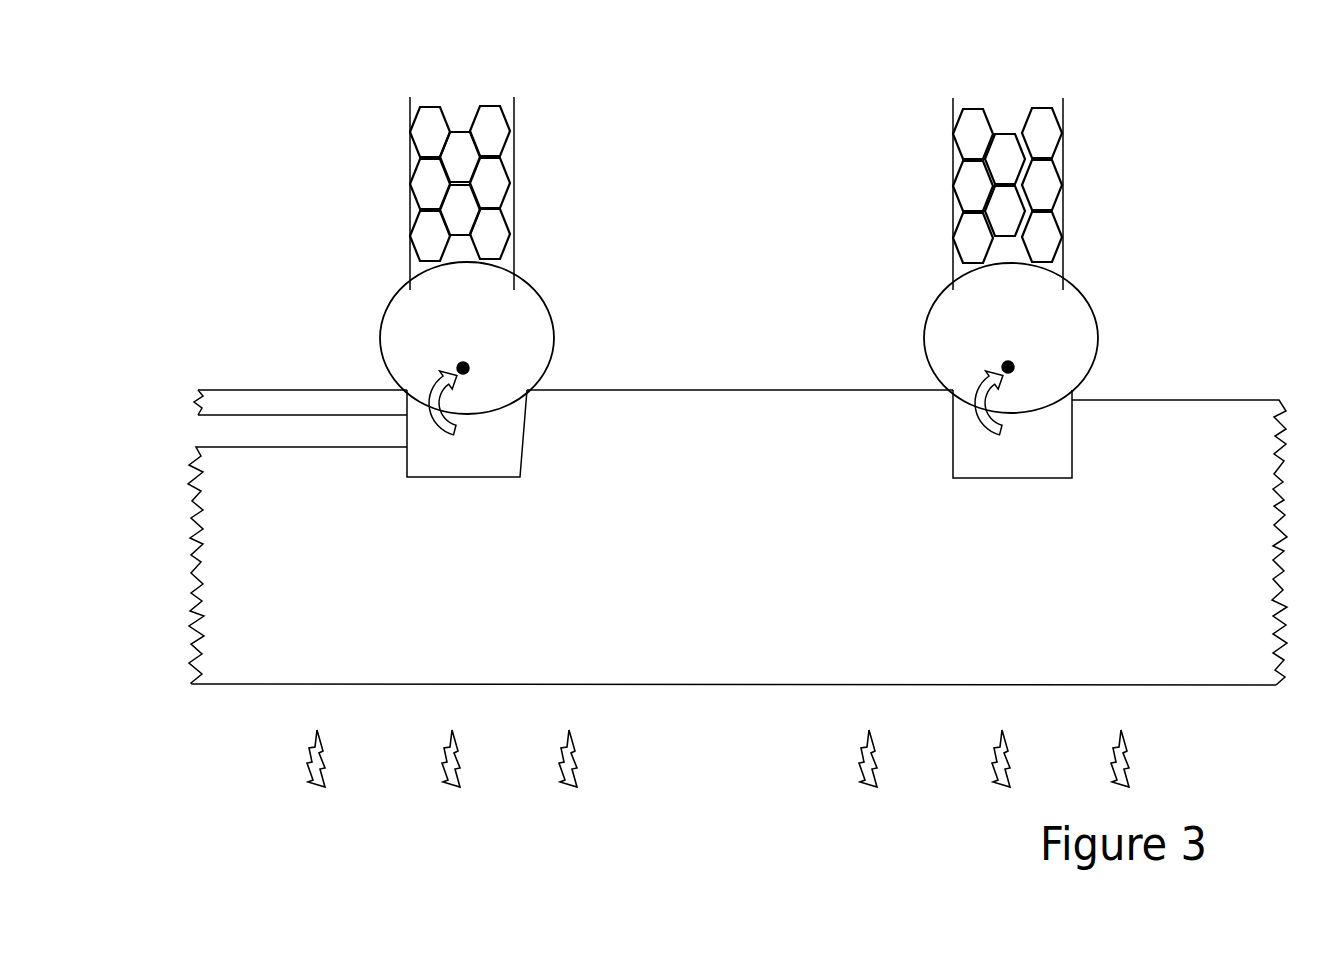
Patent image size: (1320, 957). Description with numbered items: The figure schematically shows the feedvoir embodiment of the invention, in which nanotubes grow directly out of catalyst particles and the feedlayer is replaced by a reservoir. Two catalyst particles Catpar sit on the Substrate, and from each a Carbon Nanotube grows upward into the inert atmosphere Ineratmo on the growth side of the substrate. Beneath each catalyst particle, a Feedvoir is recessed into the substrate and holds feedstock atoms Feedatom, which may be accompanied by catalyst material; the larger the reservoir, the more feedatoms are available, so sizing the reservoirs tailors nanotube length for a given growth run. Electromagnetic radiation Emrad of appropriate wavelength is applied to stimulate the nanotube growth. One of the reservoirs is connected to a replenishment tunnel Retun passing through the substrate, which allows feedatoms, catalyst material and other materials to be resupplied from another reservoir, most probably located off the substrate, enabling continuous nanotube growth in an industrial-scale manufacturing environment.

The inert atmosphere Ineratmo is at (722, 66).
The carbon nanotube Carbon Nanotube is at (941, 162).
The catalyst particle Catpar is at (923, 317).
The replenishment tunnel Retun is at (303, 436).
The feedatom Feedatom is at (995, 373).
The feedvoir Feedvoir is at (990, 454).
The substrate Substrate is at (737, 537).
The electromagnetic radiation Emrad is at (848, 763).